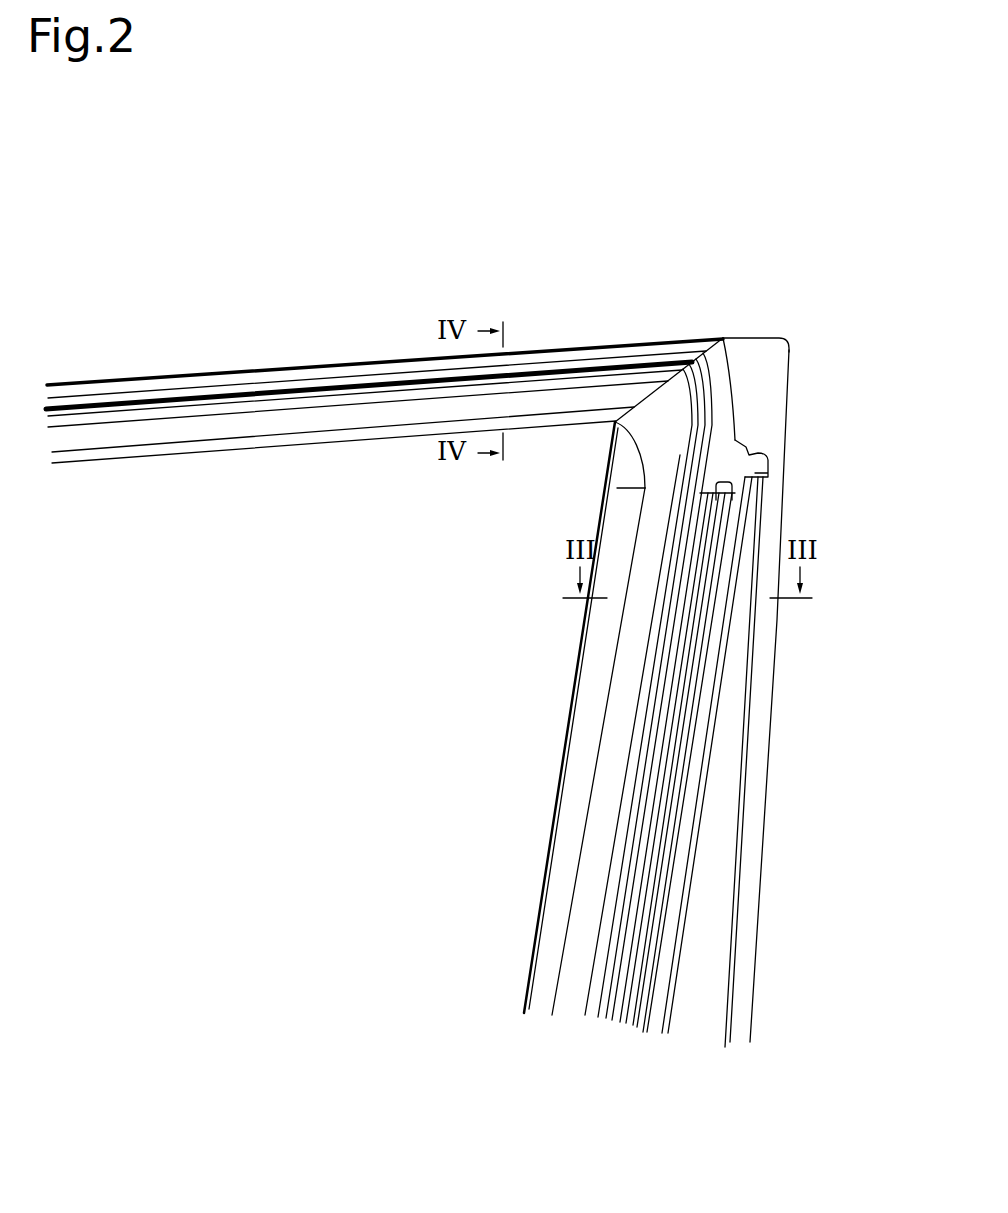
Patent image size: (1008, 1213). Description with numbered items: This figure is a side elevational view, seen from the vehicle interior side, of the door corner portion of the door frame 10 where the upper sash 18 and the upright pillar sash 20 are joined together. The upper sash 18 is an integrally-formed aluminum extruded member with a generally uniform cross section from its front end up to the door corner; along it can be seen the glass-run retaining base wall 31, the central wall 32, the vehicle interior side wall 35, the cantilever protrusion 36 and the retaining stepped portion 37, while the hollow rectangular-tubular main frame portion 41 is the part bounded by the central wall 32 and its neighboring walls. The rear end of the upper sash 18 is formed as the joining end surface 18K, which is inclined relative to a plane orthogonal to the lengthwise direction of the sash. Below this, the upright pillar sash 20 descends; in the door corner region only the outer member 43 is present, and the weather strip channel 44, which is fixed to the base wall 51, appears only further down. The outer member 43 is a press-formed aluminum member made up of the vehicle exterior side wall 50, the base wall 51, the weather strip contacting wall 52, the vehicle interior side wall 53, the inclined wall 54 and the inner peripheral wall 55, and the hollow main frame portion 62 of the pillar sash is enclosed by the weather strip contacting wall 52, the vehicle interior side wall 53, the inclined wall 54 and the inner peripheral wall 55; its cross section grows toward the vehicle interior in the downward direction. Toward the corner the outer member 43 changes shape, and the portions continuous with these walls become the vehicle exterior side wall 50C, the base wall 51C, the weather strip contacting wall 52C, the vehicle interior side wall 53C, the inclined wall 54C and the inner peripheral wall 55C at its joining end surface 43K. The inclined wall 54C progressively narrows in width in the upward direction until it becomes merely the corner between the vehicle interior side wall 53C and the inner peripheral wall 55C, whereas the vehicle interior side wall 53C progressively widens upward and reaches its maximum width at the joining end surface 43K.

The door frame 10 is at (825, 298).
The upper sash 18 is at (318, 356).
The joining end surface 18K is at (673, 402).
The upright pillar sash 20 is at (797, 753).
The glass-run retaining base wall 31 is at (250, 370).
The central wall 32 is at (180, 393).
The vehicle interior side wall 35 is at (405, 412).
The cantilever protrusion 36 is at (364, 396).
The retaining stepped portion 37 is at (402, 374).
The main frame portion 41 is at (250, 455).
The outer member 43 is at (774, 903).
The joining end surface 43K is at (722, 362).
The weather strip channel 44 is at (676, 830).
The vehicle exterior side wall 50 is at (767, 657).
The vehicle exterior side wall 50C is at (733, 348).
The base wall 51 is at (707, 462).
The base wall 51C is at (708, 383).
The weather strip contacting wall 52 is at (600, 980).
The weather strip contacting wall 52C is at (690, 402).
The vehicle interior side wall 53 is at (590, 910).
The vehicle interior side wall 53C is at (712, 358).
The inclined wall 54 is at (585, 781).
The inclined wall 54C is at (632, 472).
The inner peripheral wall 55 is at (580, 685).
The inner peripheral wall 55C is at (616, 462).
The main frame portion 62 is at (550, 817).